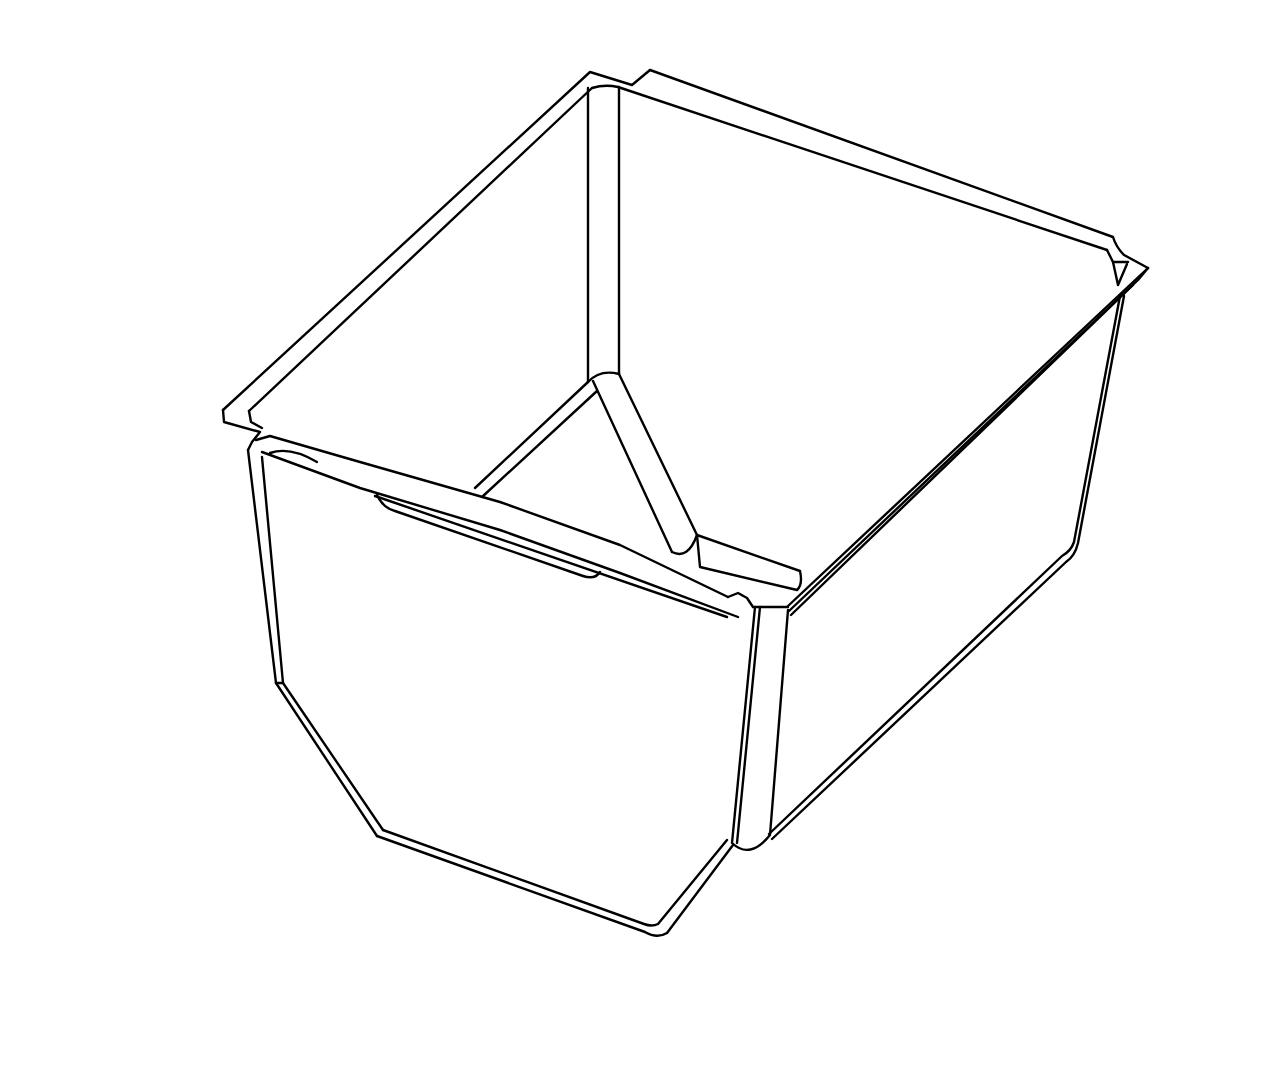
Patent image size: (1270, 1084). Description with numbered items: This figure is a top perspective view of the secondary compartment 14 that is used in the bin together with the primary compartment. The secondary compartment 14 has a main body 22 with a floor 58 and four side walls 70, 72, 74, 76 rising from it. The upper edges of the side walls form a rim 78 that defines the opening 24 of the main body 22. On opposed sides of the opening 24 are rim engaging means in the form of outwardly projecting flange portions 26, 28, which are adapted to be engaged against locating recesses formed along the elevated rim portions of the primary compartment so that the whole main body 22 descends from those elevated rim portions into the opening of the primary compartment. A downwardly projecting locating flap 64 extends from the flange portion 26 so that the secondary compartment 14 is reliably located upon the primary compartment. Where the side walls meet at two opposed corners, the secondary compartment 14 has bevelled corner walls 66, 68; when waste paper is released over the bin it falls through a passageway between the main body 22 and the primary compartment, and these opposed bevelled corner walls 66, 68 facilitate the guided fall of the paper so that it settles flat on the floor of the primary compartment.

The secondary compartment 14 is at (1045, 780).
The main body 22 is at (253, 530).
The opening 24 is at (797, 200).
The flange portion 26 is at (1013, 208).
The flange portion 28 is at (268, 448).
The floor 58 is at (703, 570).
The locating flap 64 is at (527, 550).
The bevelled corner wall 66 is at (567, 440).
The bevelled corner wall 68 is at (727, 878).
The side wall 70 is at (407, 300).
The side wall 72 is at (963, 605).
The side wall 74 is at (903, 223).
The side wall 76 is at (470, 777).
The rim 78 is at (1130, 263).